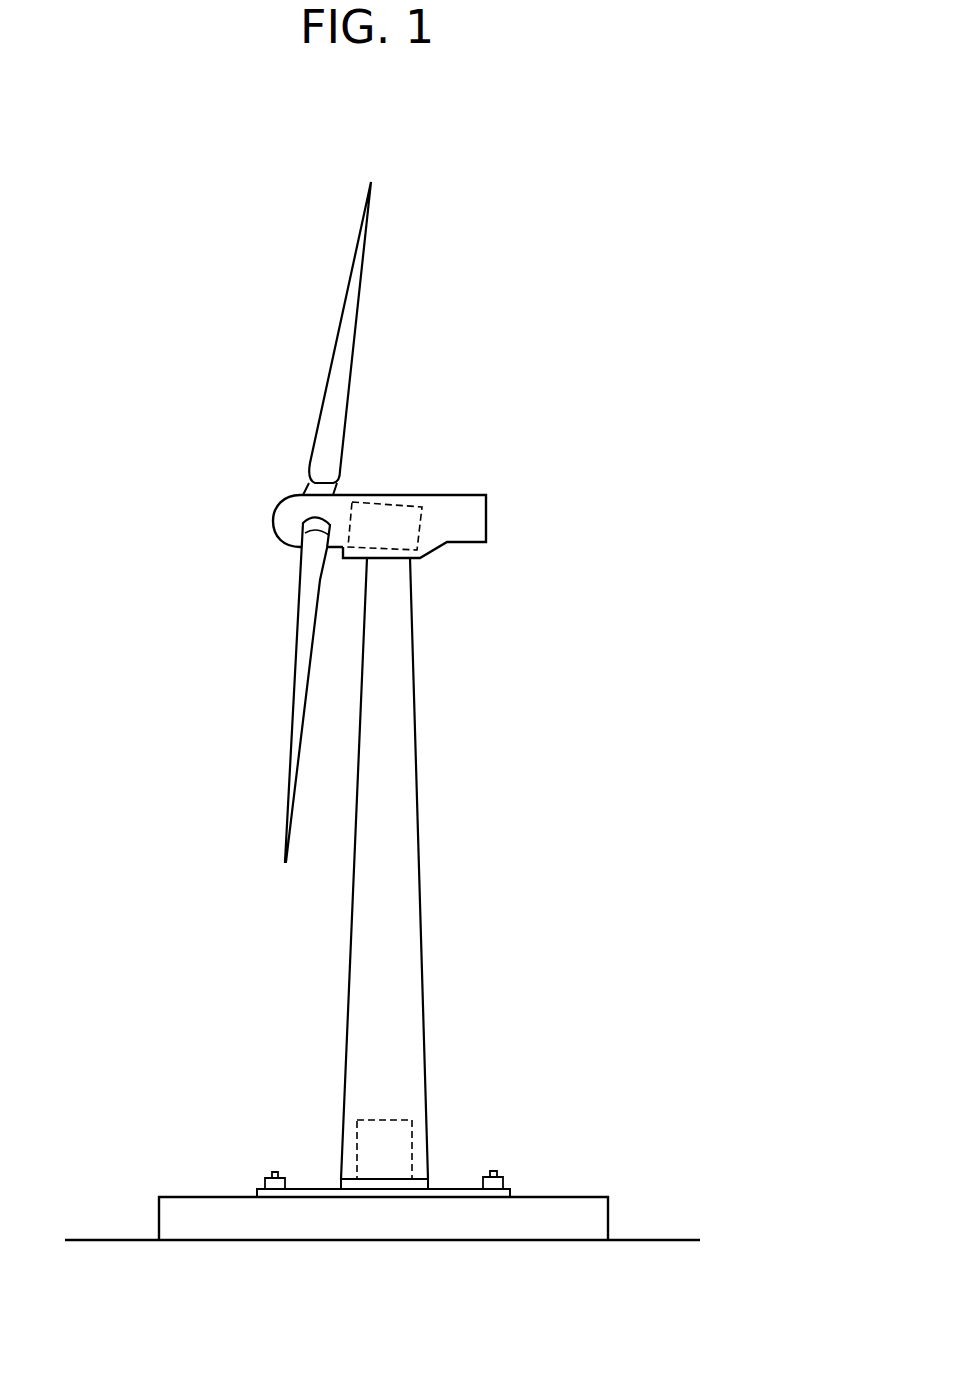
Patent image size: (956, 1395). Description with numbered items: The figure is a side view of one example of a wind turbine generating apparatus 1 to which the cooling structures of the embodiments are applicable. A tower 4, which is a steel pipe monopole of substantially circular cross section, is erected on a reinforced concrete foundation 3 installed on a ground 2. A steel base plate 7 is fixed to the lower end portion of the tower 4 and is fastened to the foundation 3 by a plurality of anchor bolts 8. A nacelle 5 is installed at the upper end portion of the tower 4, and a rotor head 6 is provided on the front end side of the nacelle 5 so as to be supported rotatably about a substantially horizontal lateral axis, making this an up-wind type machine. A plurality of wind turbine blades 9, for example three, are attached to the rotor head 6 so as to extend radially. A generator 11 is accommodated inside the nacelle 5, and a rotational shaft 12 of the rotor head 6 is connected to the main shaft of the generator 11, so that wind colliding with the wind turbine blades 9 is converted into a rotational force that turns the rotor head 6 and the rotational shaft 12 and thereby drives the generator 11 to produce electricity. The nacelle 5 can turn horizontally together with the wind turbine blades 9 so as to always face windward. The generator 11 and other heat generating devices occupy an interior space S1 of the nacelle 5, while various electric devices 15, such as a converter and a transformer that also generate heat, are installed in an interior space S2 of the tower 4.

The wind turbine generating apparatus 1 is at (518, 440).
The ground 2 is at (658, 1240).
The foundation 3 is at (568, 1197).
The tower 4 is at (413, 730).
The nacelle 5 is at (393, 495).
The rotor head 6 is at (282, 516).
The base plate 7 is at (305, 1189).
The anchor bolts 8 is at (272, 1171).
The wind turbine blades 9 is at (360, 264).
The generator 11 is at (420, 537).
The rotational shaft 12 is at (347, 533).
The electric devices 15 is at (380, 1120).
The interior space of the nacelle S1 is at (468, 513).
The interior space of the tower S2 is at (383, 963).